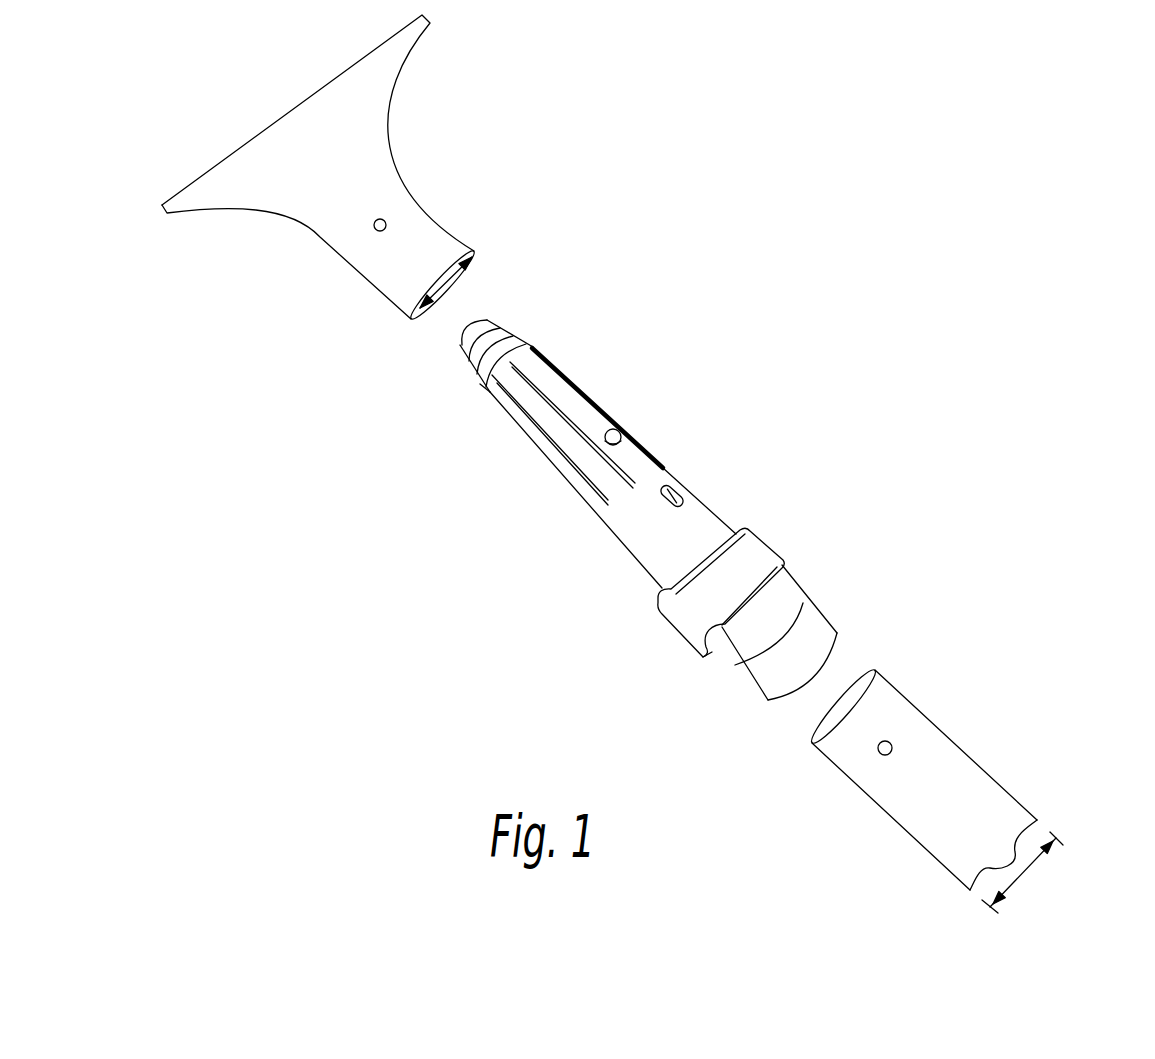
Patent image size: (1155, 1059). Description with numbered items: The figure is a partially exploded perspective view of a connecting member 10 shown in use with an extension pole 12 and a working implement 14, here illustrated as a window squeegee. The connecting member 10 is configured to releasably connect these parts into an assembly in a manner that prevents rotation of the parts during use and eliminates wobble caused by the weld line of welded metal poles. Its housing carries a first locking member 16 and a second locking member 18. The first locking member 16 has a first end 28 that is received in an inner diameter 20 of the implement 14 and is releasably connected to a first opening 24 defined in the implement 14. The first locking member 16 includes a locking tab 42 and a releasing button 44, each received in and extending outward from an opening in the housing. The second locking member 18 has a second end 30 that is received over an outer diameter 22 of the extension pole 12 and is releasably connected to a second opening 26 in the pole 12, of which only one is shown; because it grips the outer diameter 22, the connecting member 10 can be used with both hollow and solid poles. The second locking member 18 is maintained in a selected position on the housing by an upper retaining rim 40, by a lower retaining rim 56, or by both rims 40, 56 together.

The connecting member 10 is at (705, 409).
The extension pole 12 is at (873, 806).
The working implement 14 is at (252, 213).
The first locking member 16 is at (620, 420).
The second locking member 18 is at (665, 636).
The inner diameter 20 is at (443, 288).
The outer diameter 22 is at (1025, 872).
The first opening 24 is at (387, 220).
The second opening 26 is at (892, 748).
The first end 28 is at (500, 328).
The second end 30 is at (828, 654).
The upper retaining rim 40 is at (657, 607).
The locking tab 42 is at (605, 435).
The releasing button 44 is at (655, 496).
The lower retaining rim 56 is at (702, 656).